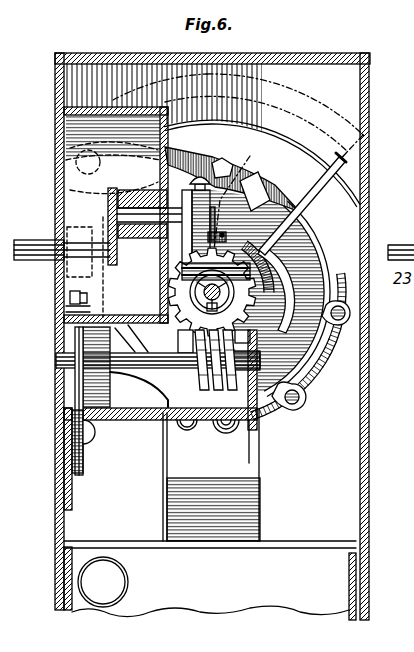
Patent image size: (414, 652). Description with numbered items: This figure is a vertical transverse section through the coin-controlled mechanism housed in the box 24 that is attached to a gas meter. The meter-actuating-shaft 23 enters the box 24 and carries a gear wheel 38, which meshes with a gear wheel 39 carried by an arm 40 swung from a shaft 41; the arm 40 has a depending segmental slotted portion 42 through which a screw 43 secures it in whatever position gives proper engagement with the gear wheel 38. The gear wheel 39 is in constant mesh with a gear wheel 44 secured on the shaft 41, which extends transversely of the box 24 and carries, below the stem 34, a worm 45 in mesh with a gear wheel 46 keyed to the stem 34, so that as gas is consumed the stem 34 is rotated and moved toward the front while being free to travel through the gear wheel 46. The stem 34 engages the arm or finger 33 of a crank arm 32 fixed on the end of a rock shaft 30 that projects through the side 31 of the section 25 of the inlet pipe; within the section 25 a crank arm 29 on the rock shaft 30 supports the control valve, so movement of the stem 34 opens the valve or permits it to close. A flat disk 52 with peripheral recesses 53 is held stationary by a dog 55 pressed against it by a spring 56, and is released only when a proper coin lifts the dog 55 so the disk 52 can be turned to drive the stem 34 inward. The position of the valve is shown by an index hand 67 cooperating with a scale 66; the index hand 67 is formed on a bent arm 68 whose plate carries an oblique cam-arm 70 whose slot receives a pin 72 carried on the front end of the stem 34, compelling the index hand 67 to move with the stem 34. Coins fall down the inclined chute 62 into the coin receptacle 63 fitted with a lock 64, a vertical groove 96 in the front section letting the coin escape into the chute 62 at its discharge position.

The meter-actuating-shaft 23 is at (47, 260).
The box 24 is at (367, 513).
The section 25 is at (114, 100).
The crank arm 29 is at (123, 240).
The rock shaft 30 is at (58, 192).
The side 31 is at (168, 150).
The crank arm 32 is at (239, 194).
The arm or finger 33 is at (296, 228).
The stem 34 is at (265, 336).
The gear wheel 38 is at (90, 235).
The gear wheel 39 is at (70, 294).
The arm 40 is at (72, 306).
The shaft 41 is at (130, 369).
The segmental slotted portion 42 is at (85, 470).
The screw 43 is at (90, 437).
The gear wheel 44 is at (132, 418).
The worm 45 is at (210, 390).
The gear wheel 46 is at (177, 330).
The disk 52 is at (313, 268).
The recesses 53 is at (264, 206).
The dog 55 is at (248, 182).
The spring 56 is at (200, 160).
The chute 62 is at (261, 514).
The coin receptacle 63 is at (210, 579).
The lock 64 is at (103, 582).
The scale 66 is at (330, 113).
The index hand 67 is at (340, 145).
The bent arm 68 is at (302, 197).
The cam-arm 70 is at (282, 258).
The pin 72 is at (223, 234).
The groove 96 is at (260, 443).